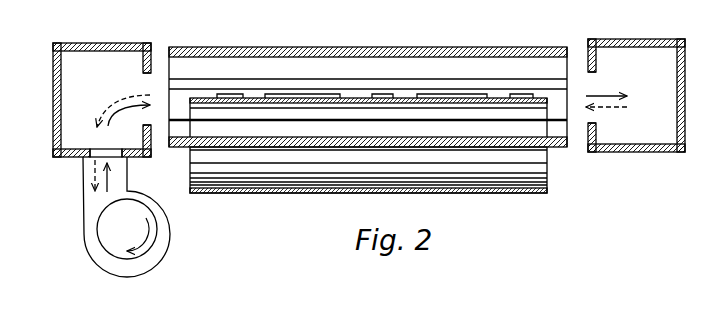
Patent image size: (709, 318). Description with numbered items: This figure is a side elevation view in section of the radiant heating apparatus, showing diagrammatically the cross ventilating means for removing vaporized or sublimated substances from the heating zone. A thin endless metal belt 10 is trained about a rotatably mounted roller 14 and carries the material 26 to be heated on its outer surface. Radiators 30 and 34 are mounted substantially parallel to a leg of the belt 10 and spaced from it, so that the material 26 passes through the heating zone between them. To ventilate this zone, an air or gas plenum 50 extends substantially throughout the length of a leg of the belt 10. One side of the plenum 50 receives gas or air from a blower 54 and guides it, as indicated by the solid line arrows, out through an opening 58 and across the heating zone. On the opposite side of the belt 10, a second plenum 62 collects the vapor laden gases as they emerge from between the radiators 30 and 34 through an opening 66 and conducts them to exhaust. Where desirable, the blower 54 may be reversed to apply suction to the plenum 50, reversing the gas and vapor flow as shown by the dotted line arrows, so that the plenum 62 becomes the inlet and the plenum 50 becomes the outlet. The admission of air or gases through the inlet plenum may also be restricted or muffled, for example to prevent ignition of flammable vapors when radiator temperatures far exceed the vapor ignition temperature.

The belt 10 is at (297, 187).
The roller 14 is at (448, 173).
The material 26 is at (423, 93).
The radiator 30 is at (380, 148).
The radiator 34 is at (343, 47).
The plenum 50 is at (105, 43).
The blower 54 is at (170, 240).
The opening 58 is at (145, 75).
The plenum 62 is at (642, 38).
The opening 66 is at (593, 75).